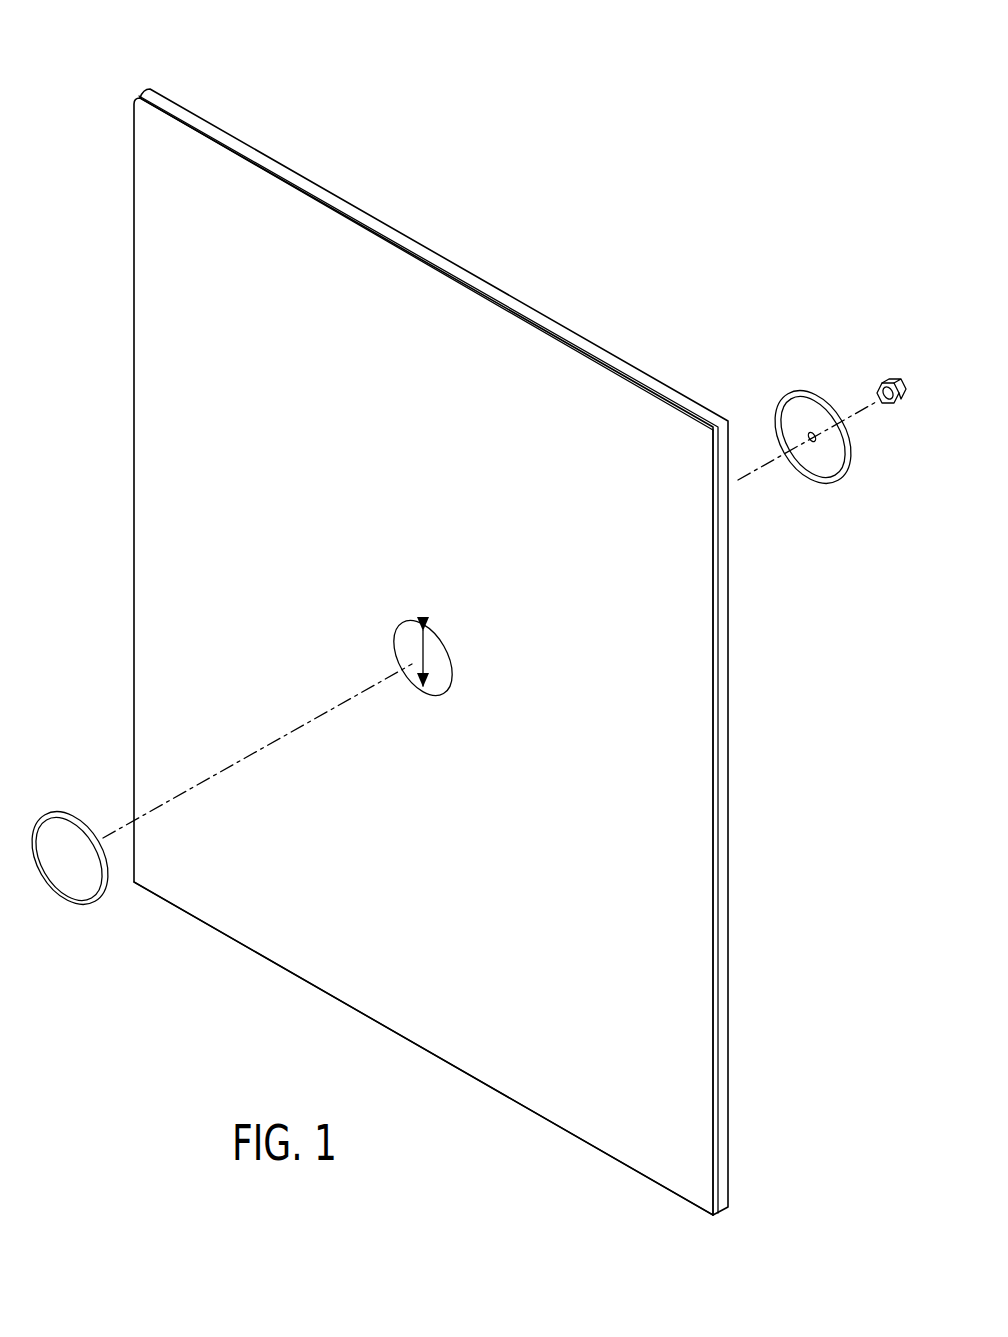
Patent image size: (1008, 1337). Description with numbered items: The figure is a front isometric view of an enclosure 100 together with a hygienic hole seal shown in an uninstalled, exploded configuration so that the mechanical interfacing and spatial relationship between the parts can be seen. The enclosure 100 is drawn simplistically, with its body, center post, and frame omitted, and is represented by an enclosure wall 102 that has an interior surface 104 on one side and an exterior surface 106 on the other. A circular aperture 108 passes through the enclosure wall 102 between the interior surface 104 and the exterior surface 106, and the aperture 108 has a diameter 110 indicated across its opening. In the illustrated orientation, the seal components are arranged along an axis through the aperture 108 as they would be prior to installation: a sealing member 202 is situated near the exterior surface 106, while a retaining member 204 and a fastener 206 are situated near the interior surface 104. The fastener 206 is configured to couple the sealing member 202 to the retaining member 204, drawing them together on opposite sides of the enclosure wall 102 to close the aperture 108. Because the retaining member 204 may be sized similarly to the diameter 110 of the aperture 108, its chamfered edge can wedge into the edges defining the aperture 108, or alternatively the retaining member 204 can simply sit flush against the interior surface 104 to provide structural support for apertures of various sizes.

The enclosure 100 is at (106, 111).
The enclosure wall 102 is at (198, 124).
The interior surface 104 is at (740, 860).
The exterior surface 106 is at (543, 1102).
The aperture 108 is at (418, 699).
The diameter 110 is at (426, 657).
The sealing member 202 is at (55, 905).
The retaining member 204 is at (823, 458).
The fastener 206 is at (885, 383).